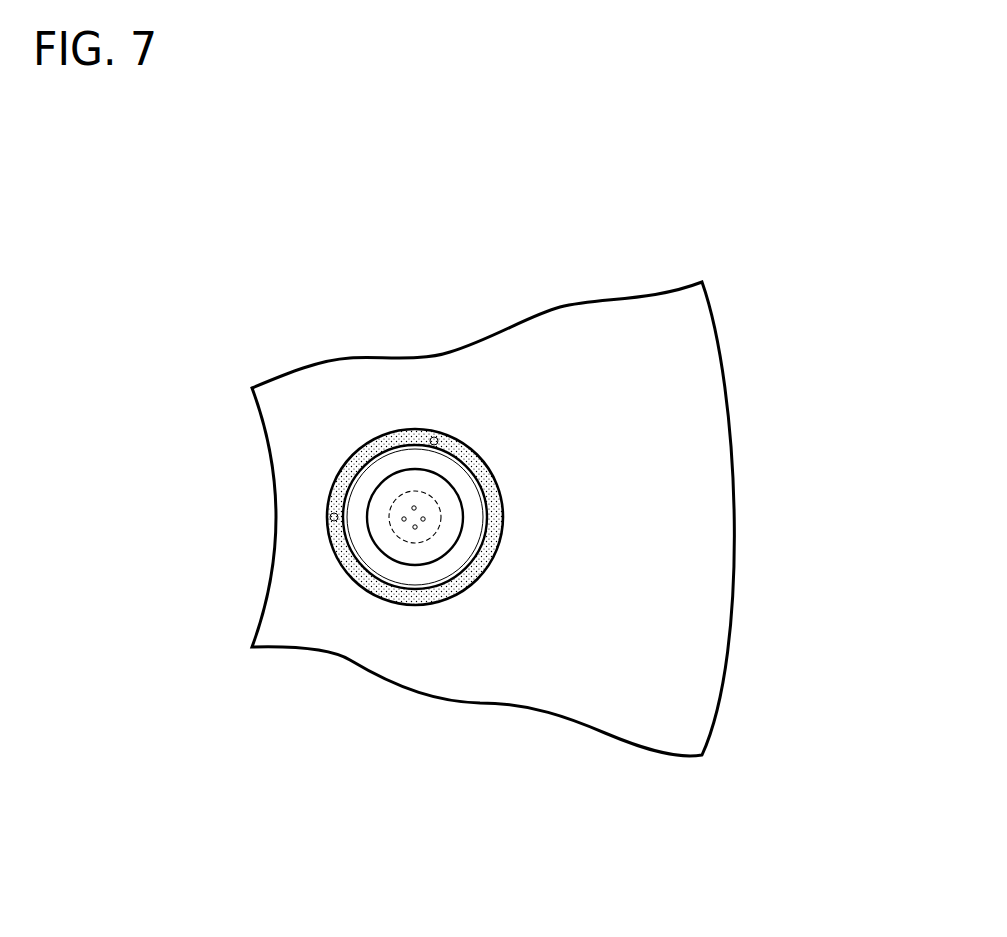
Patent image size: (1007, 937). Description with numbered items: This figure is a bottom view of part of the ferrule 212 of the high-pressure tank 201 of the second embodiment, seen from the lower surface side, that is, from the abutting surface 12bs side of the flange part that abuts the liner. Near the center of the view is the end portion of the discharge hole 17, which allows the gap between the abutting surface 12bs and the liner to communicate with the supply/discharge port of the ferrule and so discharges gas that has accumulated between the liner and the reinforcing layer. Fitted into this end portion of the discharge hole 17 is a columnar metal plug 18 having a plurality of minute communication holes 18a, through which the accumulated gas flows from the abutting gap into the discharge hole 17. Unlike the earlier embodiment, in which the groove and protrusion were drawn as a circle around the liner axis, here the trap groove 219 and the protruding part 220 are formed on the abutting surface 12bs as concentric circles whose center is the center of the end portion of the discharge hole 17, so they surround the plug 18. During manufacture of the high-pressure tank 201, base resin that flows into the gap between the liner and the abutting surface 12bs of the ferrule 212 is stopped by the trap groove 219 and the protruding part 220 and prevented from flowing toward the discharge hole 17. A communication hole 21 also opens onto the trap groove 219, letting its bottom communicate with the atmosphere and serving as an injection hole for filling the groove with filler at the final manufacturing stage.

The high-pressure tank 201 is at (727, 260).
The ferrule 212 is at (727, 383).
The abutting surface 12bs is at (605, 680).
The protruding part 220 is at (343, 488).
The trap groove 219 is at (443, 438).
The communication hole 21 is at (334, 522).
The columnar plug 18 is at (393, 497).
The discharge hole 17 is at (432, 494).
The communication holes 18a is at (414, 510).